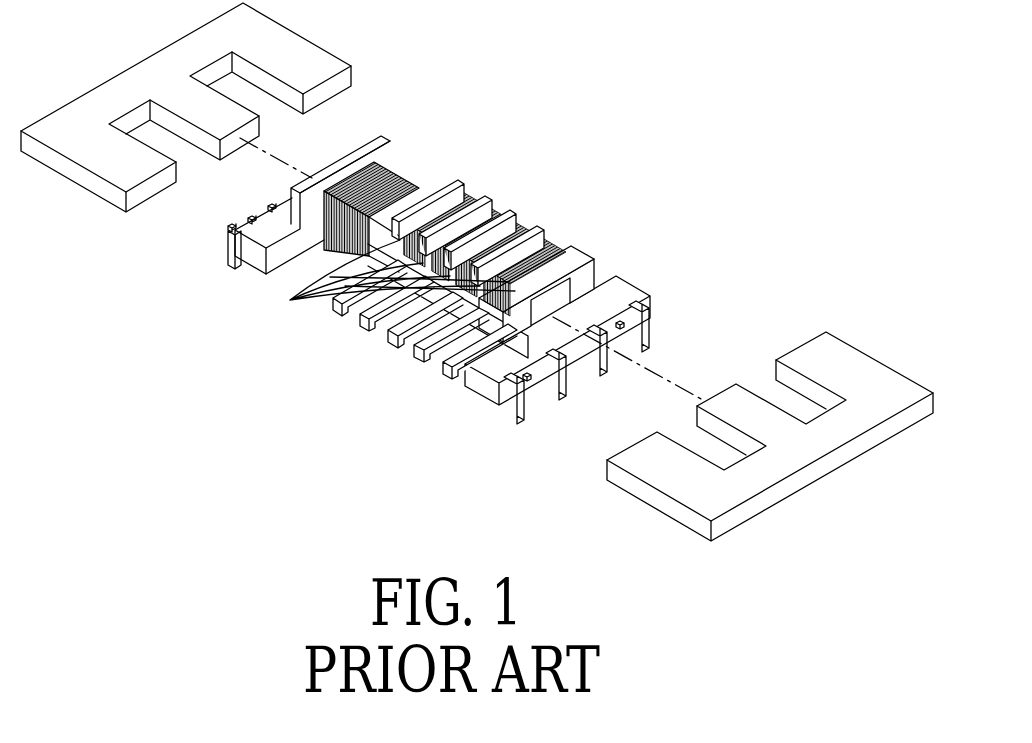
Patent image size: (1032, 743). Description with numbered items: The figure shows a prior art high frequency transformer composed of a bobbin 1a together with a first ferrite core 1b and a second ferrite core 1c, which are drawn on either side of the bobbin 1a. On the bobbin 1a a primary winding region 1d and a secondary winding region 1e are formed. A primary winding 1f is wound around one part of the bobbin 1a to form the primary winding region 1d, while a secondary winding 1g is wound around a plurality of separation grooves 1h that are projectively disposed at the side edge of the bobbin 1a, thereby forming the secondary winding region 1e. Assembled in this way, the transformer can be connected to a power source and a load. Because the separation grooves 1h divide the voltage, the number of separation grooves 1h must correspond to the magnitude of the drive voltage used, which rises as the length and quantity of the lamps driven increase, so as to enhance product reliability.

The bobbin 1a is at (625, 270).
The first ferrite core 1b is at (112, 167).
The second ferrite core 1c is at (836, 357).
The primary winding region 1d is at (466, 178).
The secondary winding region 1e is at (608, 248).
The primary winding 1f is at (318, 220).
The secondary winding 1g is at (283, 300).
The separation grooves 1h is at (352, 300).